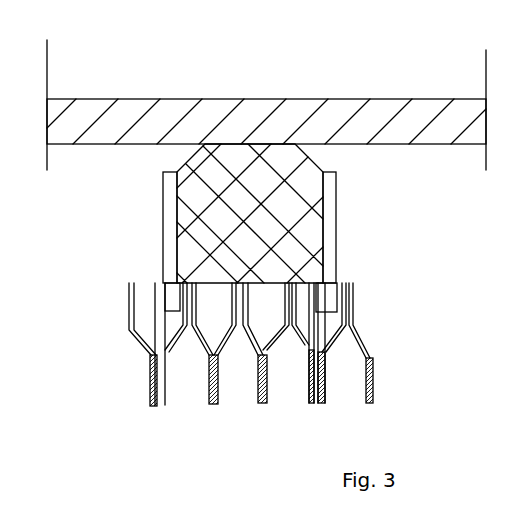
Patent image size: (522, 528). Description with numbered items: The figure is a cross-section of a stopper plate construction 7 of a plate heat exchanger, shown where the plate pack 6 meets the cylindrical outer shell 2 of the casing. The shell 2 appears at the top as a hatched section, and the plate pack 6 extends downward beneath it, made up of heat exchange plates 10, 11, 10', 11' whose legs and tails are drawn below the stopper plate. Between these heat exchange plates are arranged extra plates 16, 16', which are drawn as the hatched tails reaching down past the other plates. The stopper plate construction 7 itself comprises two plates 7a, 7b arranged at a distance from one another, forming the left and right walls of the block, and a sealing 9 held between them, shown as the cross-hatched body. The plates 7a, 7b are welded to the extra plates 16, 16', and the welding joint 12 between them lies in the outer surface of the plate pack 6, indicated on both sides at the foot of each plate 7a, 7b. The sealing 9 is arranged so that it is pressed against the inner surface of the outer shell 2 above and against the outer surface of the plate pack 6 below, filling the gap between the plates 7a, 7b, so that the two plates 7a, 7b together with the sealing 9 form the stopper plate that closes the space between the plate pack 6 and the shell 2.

The shell 2 is at (343, 116).
The plate pack 6 is at (218, 360).
The stopper plate construction 7 is at (232, 213).
The plate 7a is at (165, 232).
The plate 7b is at (325, 220).
The sealing 9 is at (305, 182).
The heat exchange plate 10 is at (276, 354).
The heat exchange plate 10' is at (119, 332).
The heat exchange plate 11 is at (339, 343).
The heat exchange plate 11' is at (200, 349).
The welding joint 12 is at (160, 280).
The extra plate 16 is at (126, 393).
The extra plate 16' is at (356, 360).